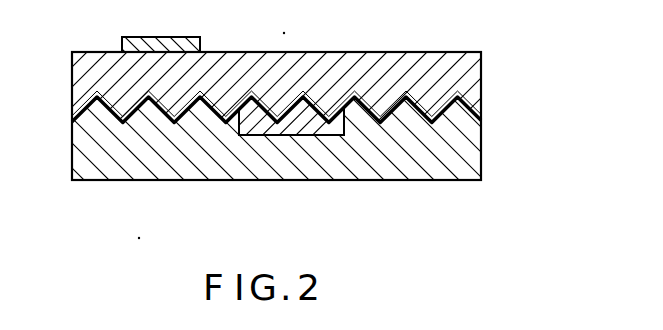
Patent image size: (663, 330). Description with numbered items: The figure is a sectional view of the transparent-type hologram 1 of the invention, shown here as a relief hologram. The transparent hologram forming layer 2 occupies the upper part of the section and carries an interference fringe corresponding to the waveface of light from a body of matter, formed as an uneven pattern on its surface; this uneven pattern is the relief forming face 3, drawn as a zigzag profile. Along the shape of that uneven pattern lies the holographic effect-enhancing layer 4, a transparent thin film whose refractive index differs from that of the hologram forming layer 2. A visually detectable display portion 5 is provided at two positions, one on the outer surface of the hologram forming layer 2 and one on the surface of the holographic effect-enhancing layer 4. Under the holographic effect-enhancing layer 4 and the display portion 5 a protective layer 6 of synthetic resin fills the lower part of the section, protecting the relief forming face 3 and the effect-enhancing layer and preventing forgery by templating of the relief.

The transparent-type hologram 1 is at (462, 42).
The transparent hologram forming layer 2 is at (472, 73).
The relief forming face 3 is at (463, 109).
The holographic effect-enhancing layer 4 is at (162, 112).
The display portion 5 is at (160, 37).
The protective layer 6 is at (472, 157).